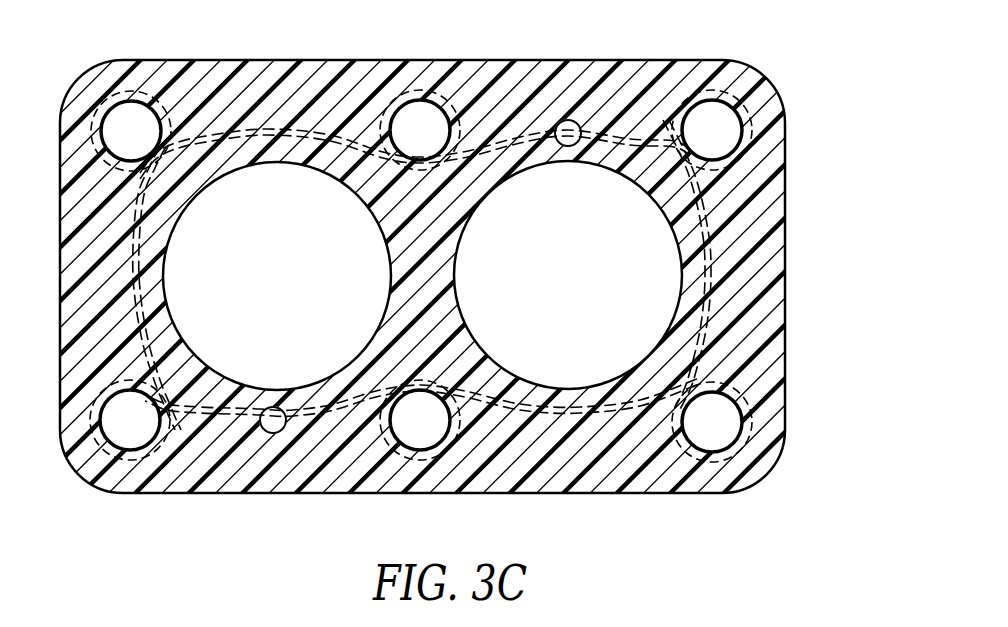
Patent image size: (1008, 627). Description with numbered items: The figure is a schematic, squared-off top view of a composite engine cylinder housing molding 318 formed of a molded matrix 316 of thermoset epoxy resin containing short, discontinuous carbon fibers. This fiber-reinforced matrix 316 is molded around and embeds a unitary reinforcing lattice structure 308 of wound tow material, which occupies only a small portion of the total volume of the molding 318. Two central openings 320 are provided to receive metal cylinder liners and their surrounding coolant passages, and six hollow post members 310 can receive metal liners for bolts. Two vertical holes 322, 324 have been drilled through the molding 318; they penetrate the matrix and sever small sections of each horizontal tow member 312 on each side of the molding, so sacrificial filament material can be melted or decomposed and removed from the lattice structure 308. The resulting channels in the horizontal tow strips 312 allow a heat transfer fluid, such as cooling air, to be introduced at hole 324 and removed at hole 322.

The unitary reinforcing lattice structure 308 is at (720, 263).
The post members 310 is at (146, 93).
The horizontal tow members 312 is at (140, 283).
The molded matrix 316 is at (763, 330).
The composite engine cylinder housing molding 318 is at (790, 288).
The central openings 320 is at (294, 291).
The vertical hole 322 is at (567, 122).
The vertical hole 324 is at (273, 420).